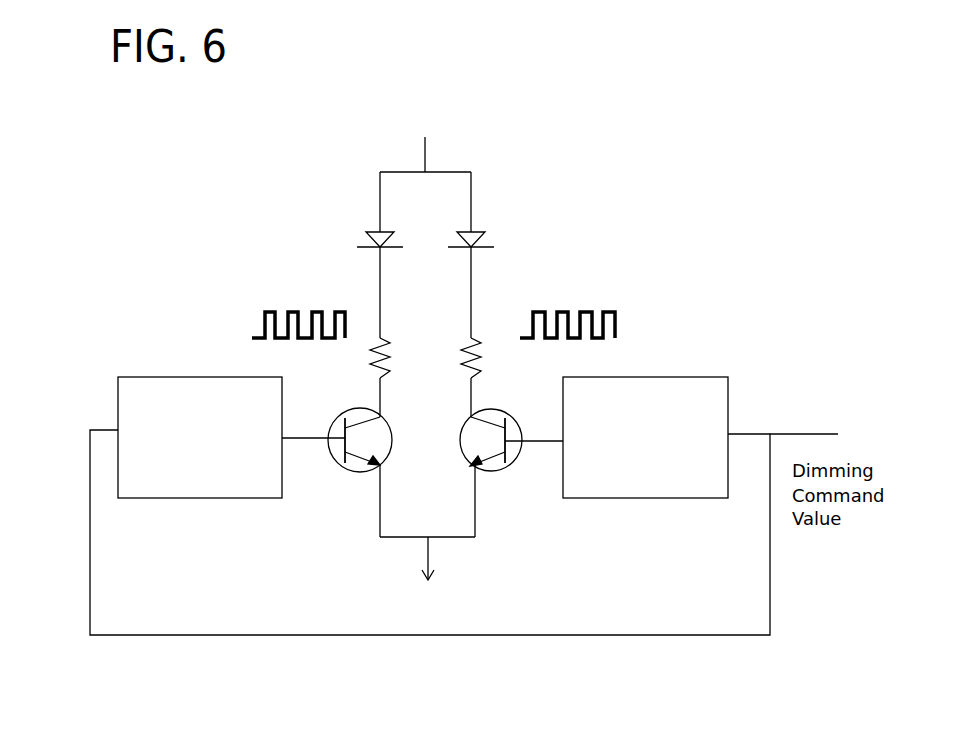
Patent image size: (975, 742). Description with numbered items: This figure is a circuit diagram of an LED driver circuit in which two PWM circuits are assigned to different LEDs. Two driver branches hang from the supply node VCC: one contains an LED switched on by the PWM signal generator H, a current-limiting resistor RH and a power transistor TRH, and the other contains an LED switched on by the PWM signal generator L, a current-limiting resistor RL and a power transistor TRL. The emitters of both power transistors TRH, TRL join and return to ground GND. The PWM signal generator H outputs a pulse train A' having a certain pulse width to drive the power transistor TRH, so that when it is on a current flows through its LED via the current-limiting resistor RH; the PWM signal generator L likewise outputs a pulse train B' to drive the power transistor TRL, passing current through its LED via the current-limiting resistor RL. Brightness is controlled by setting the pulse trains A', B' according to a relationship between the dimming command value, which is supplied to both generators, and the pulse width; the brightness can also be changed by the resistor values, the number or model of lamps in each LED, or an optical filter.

The supply voltage node VCC is at (425, 140).
The current-limiting resistor RH is at (361, 377).
The current-limiting resistor RL is at (490, 377).
The power transistor TRH is at (337, 472).
The power transistor TRL is at (511, 473).
The ground GND is at (427, 575).
The pulse train A' is at (210, 319).
The pulse train B' is at (659, 319).